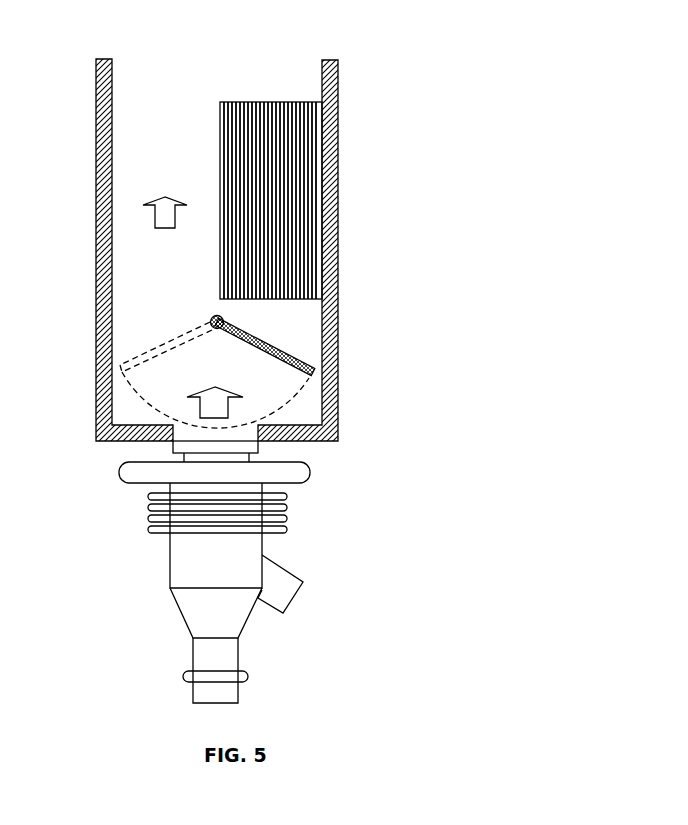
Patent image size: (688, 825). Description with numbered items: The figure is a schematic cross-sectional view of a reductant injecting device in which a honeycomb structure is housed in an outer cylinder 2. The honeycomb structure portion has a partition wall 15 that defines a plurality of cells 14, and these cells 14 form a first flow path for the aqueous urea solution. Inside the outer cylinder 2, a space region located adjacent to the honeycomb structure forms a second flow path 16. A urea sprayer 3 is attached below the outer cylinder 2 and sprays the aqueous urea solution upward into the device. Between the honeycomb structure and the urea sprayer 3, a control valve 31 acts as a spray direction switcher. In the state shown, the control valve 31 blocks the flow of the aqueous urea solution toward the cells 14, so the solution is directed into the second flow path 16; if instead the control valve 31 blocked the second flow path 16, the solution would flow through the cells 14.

The outer cylinder 2 is at (338, 317).
The urea sprayer 3 is at (240, 545).
The cells 14 is at (273, 104).
The partition wall 15 is at (303, 104).
The second flow path 16 is at (140, 243).
The control valve 31 is at (280, 350).